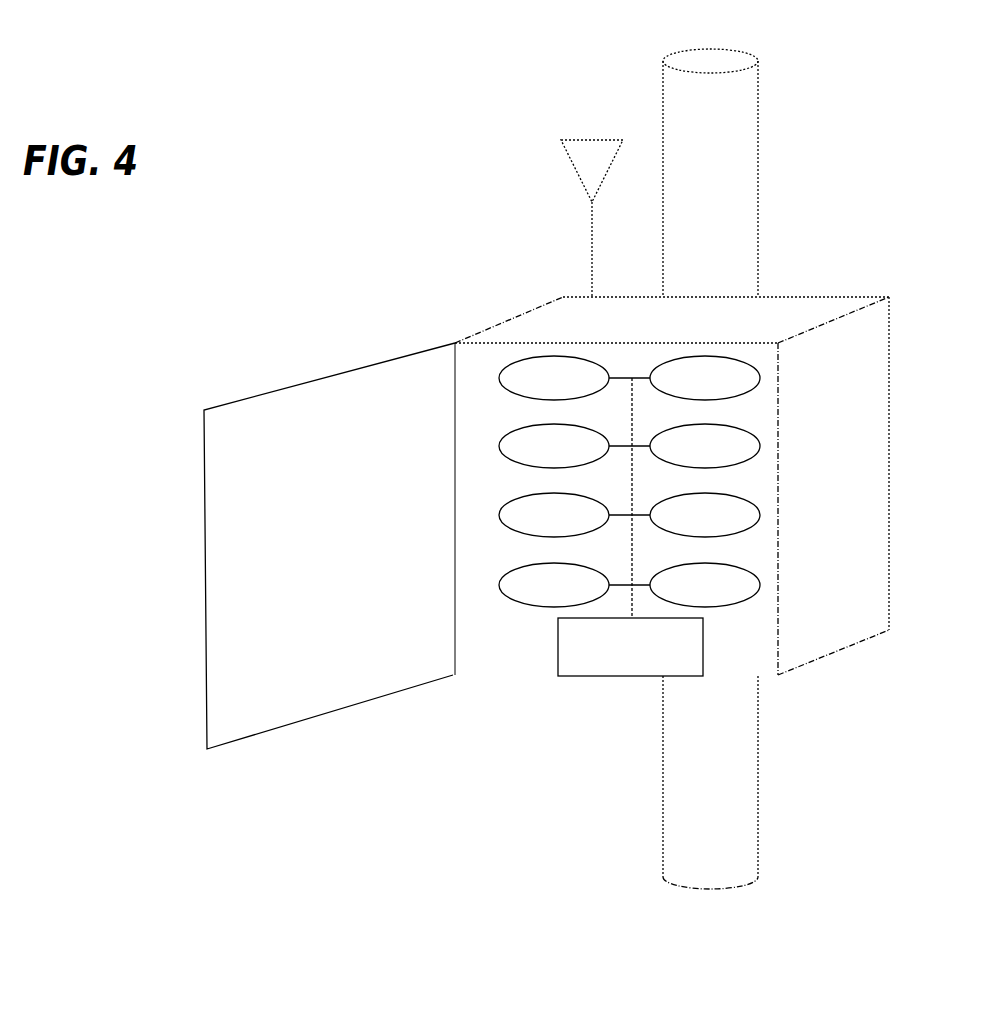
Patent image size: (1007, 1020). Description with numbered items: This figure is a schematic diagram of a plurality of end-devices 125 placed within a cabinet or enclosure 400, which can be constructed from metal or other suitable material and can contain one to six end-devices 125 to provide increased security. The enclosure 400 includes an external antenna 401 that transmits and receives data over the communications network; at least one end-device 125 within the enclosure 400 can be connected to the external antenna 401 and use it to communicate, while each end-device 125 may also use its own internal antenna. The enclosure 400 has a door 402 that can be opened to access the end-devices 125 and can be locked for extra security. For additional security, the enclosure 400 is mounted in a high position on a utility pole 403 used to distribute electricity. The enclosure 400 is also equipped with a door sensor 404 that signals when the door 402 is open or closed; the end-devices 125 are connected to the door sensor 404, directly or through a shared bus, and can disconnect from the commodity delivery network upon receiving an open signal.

The end-device 125 is at (500, 588).
The enclosure 400 is at (787, 317).
The external antenna 401 is at (592, 152).
The door 402 is at (328, 638).
The utility pole 403 is at (740, 162).
The door sensor 404 is at (682, 663).